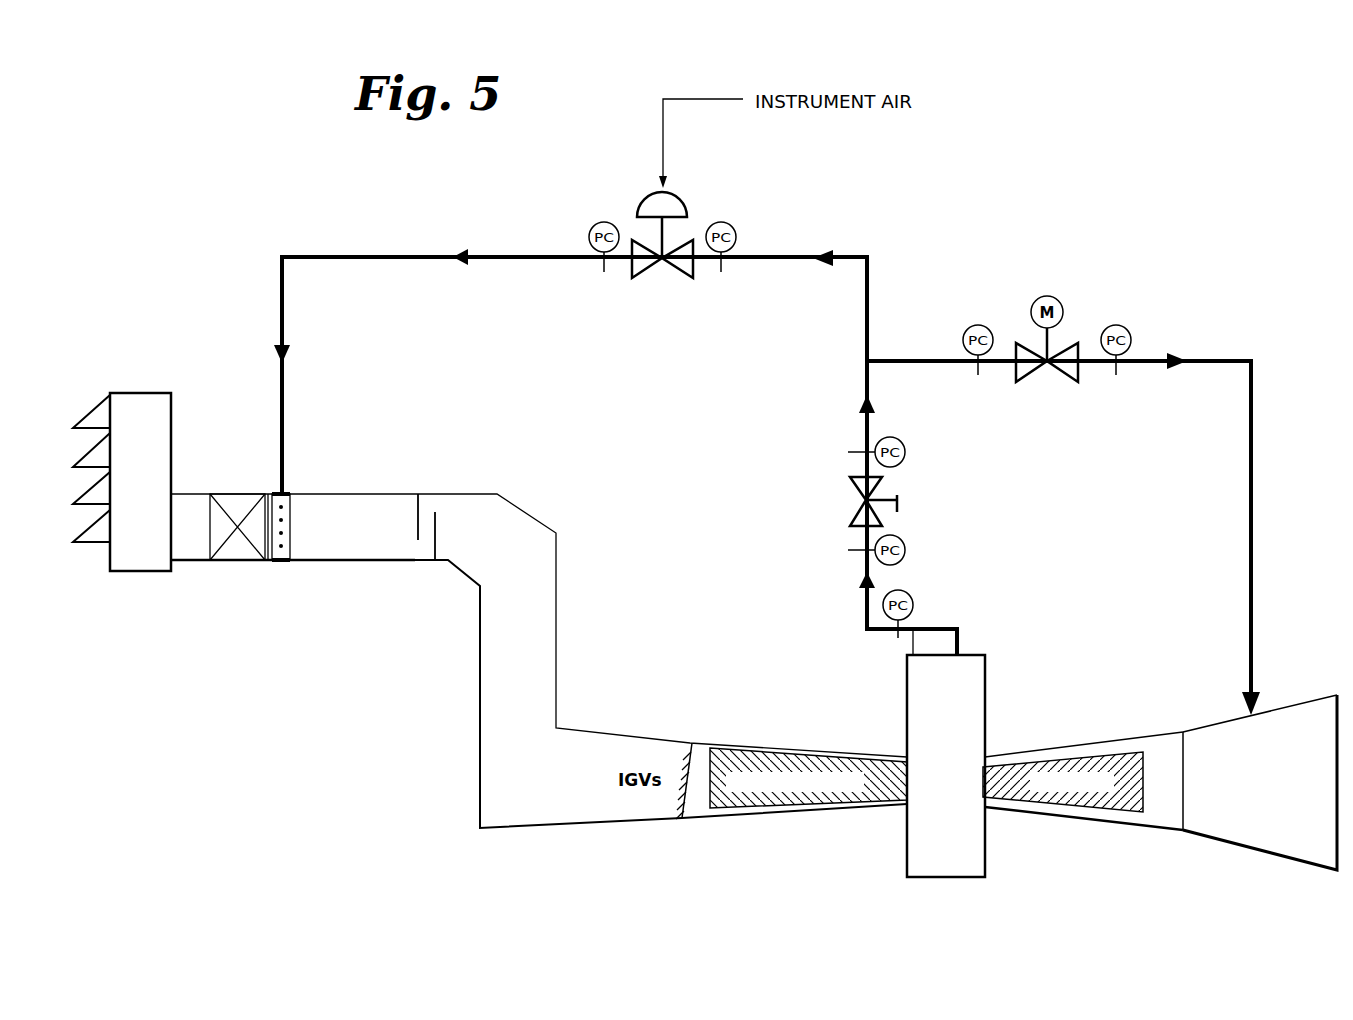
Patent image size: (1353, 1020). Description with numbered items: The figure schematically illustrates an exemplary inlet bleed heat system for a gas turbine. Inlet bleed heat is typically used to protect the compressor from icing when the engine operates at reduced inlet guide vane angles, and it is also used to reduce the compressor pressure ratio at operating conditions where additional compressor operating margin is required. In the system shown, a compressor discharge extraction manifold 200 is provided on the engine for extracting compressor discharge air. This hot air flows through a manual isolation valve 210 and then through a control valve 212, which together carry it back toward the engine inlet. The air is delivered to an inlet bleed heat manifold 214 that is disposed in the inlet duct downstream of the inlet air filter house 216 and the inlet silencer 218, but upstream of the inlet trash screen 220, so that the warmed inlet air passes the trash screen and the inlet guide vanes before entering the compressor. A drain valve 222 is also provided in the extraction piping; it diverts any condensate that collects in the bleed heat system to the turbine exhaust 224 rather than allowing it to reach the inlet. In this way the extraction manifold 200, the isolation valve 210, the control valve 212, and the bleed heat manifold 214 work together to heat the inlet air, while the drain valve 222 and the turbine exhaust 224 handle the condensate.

The compressor discharge extraction manifold 200 is at (970, 623).
The manual isolation valve 210 is at (897, 497).
The control valve 212 is at (662, 244).
The inlet bleed heat manifold 214 is at (303, 484).
The inlet air filter house 216 is at (116, 580).
The inlet silencer 218 is at (240, 568).
The inlet trash screen 220 is at (412, 570).
The drain valve 222 is at (1047, 364).
The turbine exhaust 224 is at (1206, 712).